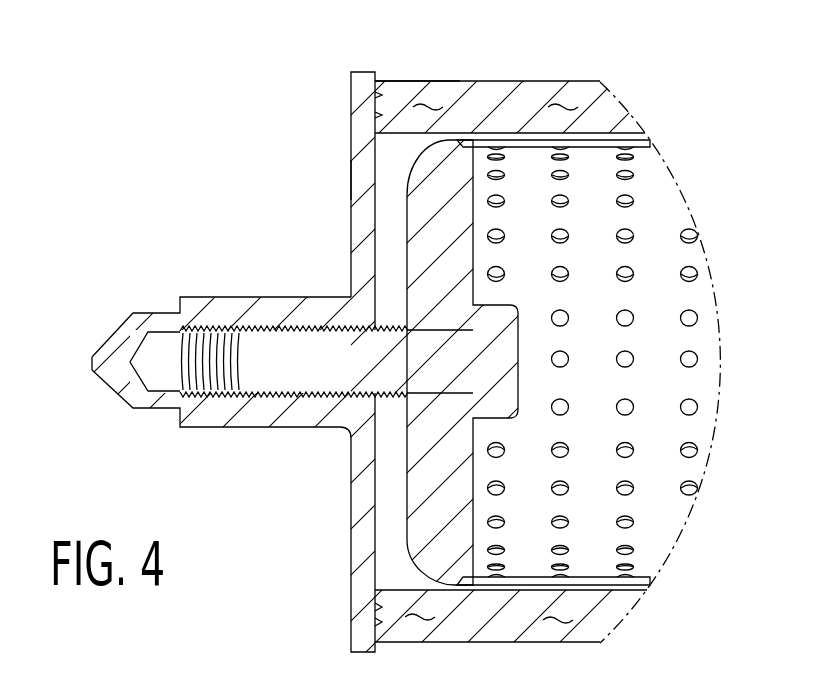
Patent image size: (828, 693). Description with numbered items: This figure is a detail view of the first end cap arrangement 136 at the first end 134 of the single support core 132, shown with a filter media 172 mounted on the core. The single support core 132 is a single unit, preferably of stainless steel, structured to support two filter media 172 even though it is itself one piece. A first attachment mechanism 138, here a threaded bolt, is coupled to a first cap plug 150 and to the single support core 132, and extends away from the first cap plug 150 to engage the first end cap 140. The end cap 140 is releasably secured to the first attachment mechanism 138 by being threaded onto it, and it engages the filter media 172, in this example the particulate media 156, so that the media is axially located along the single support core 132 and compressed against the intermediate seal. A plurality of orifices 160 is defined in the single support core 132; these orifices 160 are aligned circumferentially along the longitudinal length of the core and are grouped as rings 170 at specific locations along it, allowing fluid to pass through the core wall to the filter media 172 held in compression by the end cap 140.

The single support core 132 is at (652, 542).
The first end 134 is at (338, 88).
The first end cap arrangement 136 is at (277, 155).
The first attachment mechanism 138 is at (318, 382).
The first end cap 140 is at (351, 180).
The first cap plug 150 is at (417, 525).
The particulate media 156 is at (488, 81).
The orifices 160 is at (657, 200).
The rings 170 is at (568, 513).
The filter media 172 is at (452, 63).